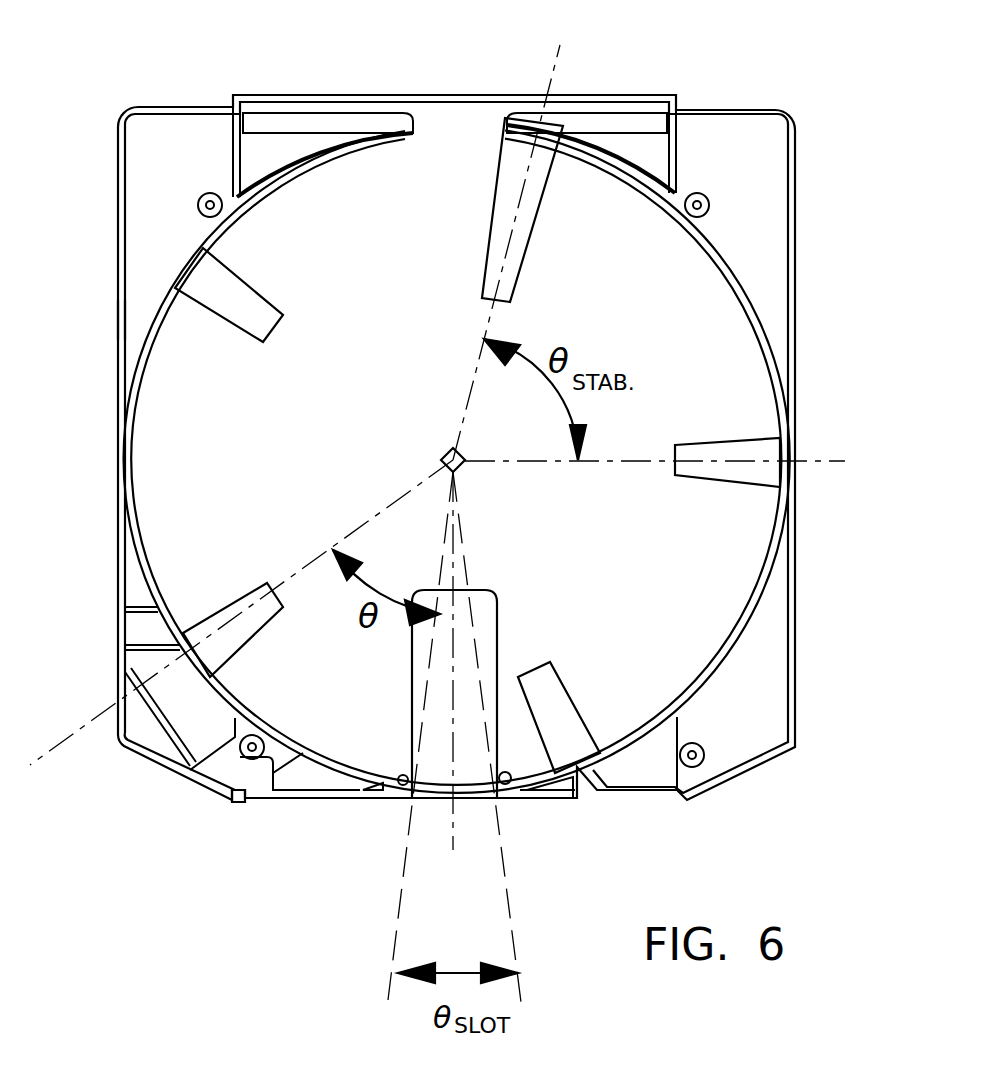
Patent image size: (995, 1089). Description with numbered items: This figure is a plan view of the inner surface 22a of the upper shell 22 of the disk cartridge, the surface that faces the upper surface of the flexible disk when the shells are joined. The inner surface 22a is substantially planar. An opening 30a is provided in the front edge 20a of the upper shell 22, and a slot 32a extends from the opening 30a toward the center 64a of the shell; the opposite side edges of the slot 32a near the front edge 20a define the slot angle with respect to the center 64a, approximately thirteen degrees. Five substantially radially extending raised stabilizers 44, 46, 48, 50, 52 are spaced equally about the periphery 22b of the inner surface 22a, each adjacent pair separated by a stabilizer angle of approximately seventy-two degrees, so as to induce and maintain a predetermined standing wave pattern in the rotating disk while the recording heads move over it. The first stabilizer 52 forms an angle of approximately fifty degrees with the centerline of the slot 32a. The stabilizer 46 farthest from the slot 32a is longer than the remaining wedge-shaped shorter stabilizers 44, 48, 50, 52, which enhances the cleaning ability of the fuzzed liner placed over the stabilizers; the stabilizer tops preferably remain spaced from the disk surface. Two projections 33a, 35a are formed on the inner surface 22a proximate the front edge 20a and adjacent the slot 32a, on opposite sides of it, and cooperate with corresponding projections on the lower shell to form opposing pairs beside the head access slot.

The upper shell 22 is at (735, 108).
The inner surface 22a is at (722, 363).
The periphery 22b is at (150, 318).
The stabilizer 44 is at (272, 302).
The stabilizer 46 is at (538, 225).
The stabilizer 48 is at (742, 488).
The stabilizer 50 is at (565, 690).
The first stabilizer 52 is at (258, 583).
The center 64a is at (455, 448).
The slot 32a is at (412, 650).
The opening 30a is at (445, 800).
The projection 33a is at (403, 775).
The projection 35a is at (506, 786).
The front edge 20a is at (268, 800).